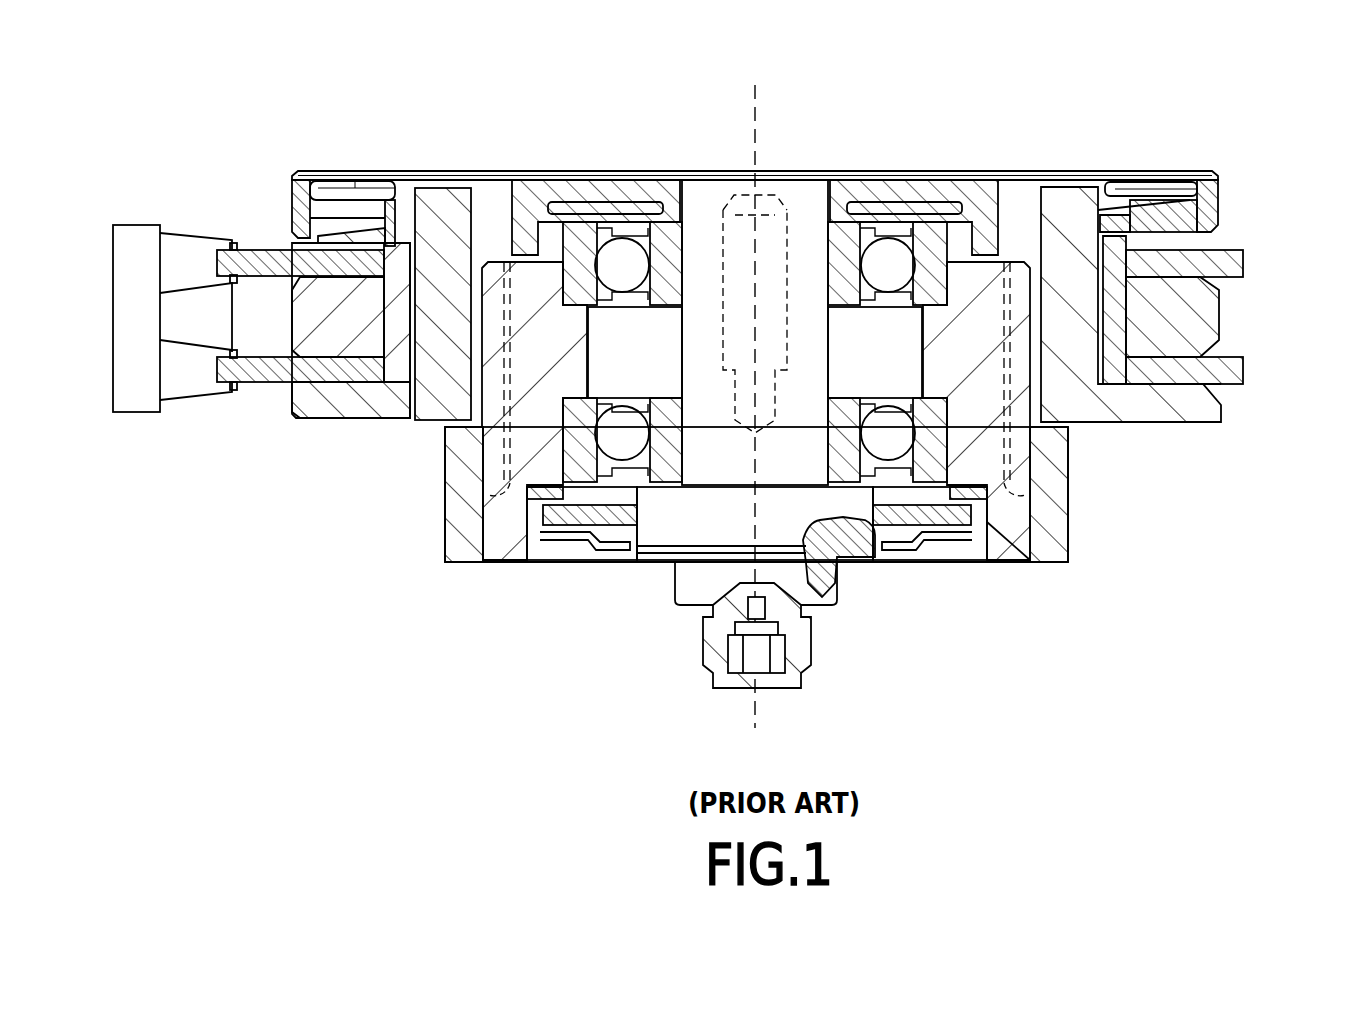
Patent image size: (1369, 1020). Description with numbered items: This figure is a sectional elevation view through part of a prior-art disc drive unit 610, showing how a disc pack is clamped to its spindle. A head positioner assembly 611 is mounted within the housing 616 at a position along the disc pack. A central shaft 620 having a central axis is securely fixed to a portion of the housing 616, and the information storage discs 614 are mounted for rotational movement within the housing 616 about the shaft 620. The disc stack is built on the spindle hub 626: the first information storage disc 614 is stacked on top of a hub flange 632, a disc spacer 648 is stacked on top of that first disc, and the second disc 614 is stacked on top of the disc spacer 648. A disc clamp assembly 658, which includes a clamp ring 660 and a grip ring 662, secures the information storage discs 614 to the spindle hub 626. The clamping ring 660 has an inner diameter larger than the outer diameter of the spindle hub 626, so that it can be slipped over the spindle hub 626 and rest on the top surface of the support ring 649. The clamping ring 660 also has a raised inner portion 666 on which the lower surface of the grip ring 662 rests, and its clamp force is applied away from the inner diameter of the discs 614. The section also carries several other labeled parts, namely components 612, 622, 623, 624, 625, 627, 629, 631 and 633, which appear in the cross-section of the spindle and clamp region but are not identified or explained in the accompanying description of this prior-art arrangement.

The disc drive unit 610 is at (1006, 580).
The head positioner assembly 611 is at (135, 225).
The screws 612 is at (232, 337).
The information storage disc 614 is at (1240, 264).
The housing 616 is at (808, 650).
The central shaft 620 is at (807, 205).
The bearings 622 is at (880, 225).
The hub 623 is at (487, 262).
The stator assembly 624 is at (890, 480).
The upper bearing cap 625 is at (1015, 250).
The spindle hub 626 is at (1040, 200).
The bearing retainer 627 is at (960, 220).
The spacer block 629 is at (1150, 300).
The left bearing cap 631 is at (387, 240).
The hub flange 632 is at (1225, 418).
The clamp block 633 is at (398, 418).
The disc spacer 648 is at (305, 320).
The support ring 649 is at (1215, 243).
The disc clamp assembly 658 is at (1221, 191).
The clamp ring 660 is at (1150, 190).
The grip ring 662 is at (1215, 170).
The raised inner portion 666 is at (1105, 220).